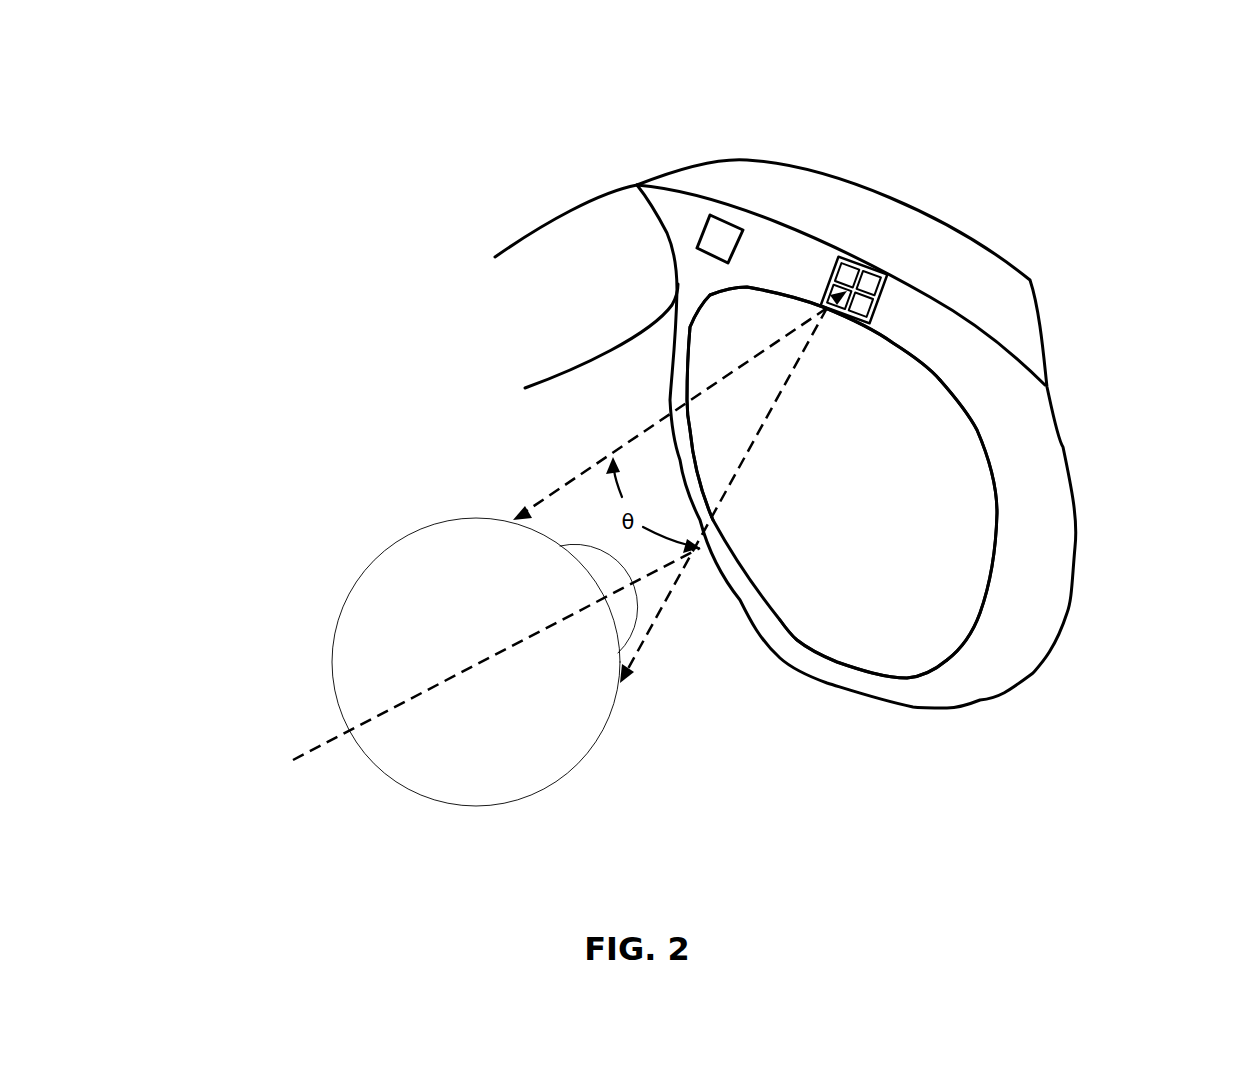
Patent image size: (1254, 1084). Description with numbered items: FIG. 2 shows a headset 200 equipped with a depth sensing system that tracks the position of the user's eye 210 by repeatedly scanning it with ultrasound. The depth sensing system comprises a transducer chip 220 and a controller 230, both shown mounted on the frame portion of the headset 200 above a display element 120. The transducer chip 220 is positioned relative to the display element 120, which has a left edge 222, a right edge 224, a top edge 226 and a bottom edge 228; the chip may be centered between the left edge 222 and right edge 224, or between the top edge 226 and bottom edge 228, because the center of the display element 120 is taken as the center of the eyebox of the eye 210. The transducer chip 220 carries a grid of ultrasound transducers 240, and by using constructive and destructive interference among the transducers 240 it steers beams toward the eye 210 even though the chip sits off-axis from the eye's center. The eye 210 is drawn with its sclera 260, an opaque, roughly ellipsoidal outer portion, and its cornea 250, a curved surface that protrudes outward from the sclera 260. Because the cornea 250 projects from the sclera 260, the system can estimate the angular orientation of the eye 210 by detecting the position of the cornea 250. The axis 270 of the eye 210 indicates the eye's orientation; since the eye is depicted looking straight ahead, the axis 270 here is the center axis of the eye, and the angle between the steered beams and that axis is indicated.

The headset 200 is at (189, 116).
The display element 120 is at (967, 410).
The left edge 222 is at (697, 317).
The right edge 224 is at (997, 535).
The top edge 226 is at (893, 343).
The bottom edge 228 is at (837, 662).
The controller 230 is at (725, 218).
The transducer chip 220 is at (866, 272).
The transducer 240 is at (870, 285).
The eye 210 is at (551, 636).
The sclera 260 is at (402, 540).
The cornea 250 is at (592, 552).
The axis 270 is at (333, 735).